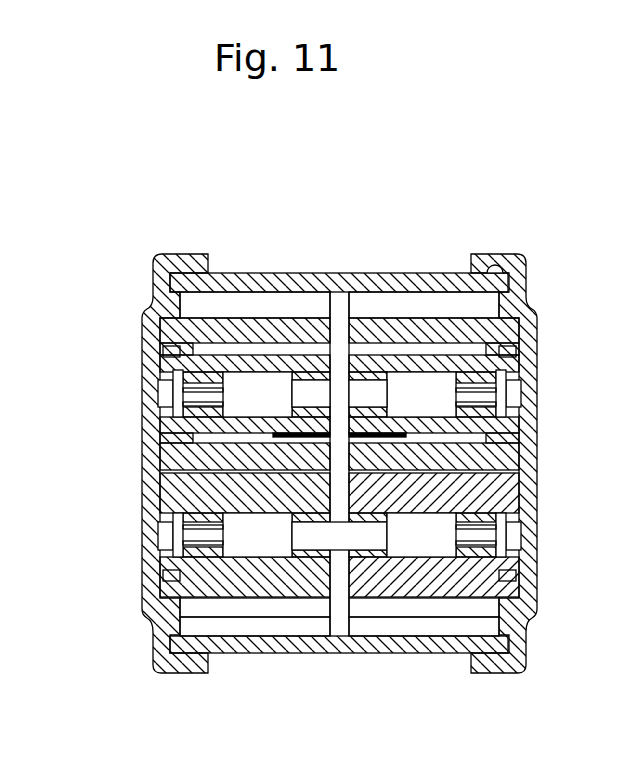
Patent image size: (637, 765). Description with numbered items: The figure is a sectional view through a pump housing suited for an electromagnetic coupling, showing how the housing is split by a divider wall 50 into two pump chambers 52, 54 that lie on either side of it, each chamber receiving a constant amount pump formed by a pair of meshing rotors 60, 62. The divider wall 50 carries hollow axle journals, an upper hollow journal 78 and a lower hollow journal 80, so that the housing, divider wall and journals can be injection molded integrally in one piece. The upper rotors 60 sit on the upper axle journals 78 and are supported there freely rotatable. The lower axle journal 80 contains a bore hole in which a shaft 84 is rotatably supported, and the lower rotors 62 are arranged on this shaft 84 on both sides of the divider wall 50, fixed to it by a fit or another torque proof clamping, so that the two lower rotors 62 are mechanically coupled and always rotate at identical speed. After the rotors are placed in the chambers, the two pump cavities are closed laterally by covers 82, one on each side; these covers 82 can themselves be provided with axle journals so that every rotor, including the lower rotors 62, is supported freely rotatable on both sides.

The divider wall 50 is at (339, 470).
The pump chamber 52 is at (339, 446).
The pump chamber 54 is at (485, 630).
The upper rotor 60 is at (195, 306).
The lower rotor 62 is at (212, 599).
The upper hollow journal 78 is at (339, 326).
The lower hollow journal 80 is at (339, 601).
The cover 82 is at (104, 463).
The shaft 84 is at (530, 463).